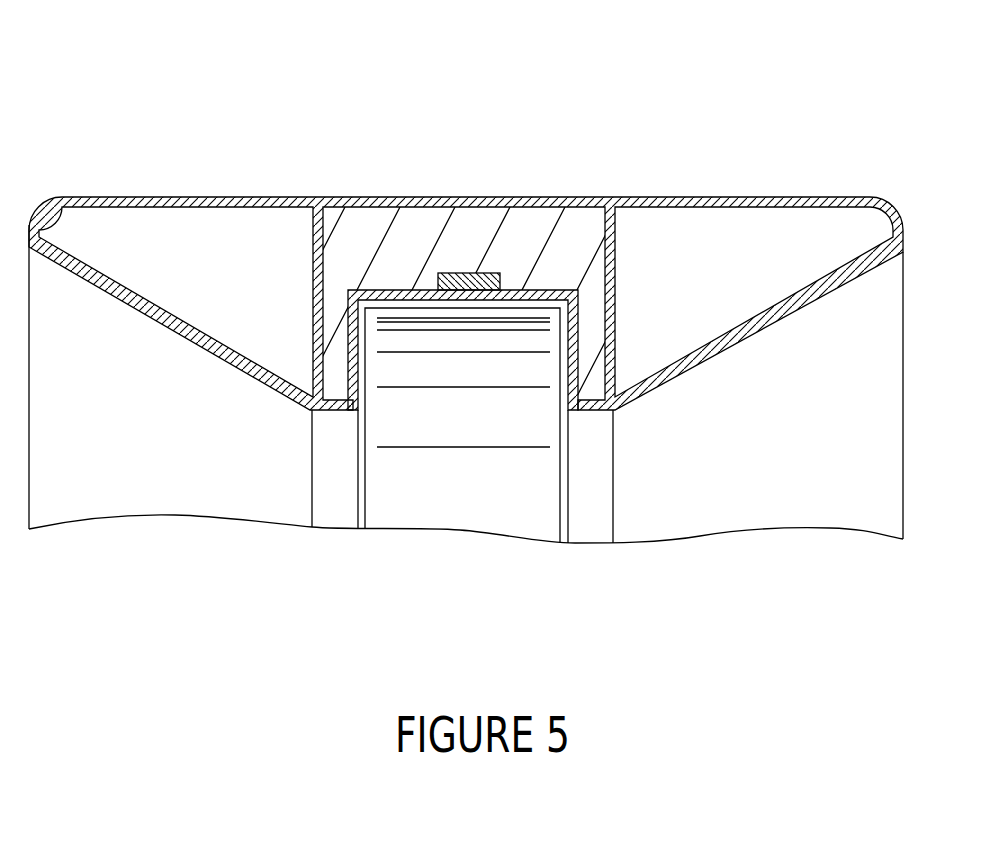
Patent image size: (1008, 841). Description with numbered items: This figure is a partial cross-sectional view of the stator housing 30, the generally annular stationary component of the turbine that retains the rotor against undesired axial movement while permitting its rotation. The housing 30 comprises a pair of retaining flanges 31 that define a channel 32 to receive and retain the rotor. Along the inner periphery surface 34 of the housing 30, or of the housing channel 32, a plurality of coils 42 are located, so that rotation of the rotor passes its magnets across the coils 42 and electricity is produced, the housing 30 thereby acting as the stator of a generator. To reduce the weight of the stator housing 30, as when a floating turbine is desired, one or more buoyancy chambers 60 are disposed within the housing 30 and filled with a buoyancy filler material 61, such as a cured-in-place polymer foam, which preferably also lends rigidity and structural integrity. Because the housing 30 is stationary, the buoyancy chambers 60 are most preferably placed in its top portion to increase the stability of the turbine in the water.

The stator housing 30 is at (130, 132).
The retaining flanges 31 is at (336, 506).
The channel 32 is at (518, 567).
The inner periphery surface 34 is at (424, 470).
The coils 42 is at (474, 248).
The buoyancy chambers 60 is at (394, 171).
The buoyancy filler material 61 is at (340, 255).